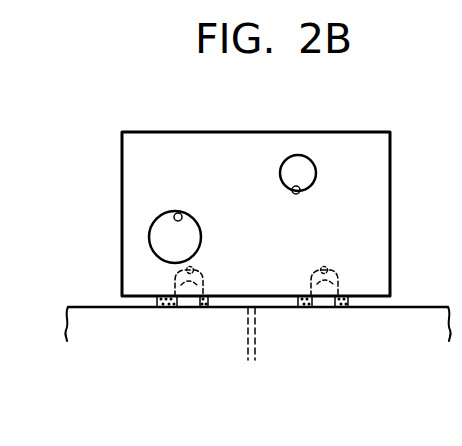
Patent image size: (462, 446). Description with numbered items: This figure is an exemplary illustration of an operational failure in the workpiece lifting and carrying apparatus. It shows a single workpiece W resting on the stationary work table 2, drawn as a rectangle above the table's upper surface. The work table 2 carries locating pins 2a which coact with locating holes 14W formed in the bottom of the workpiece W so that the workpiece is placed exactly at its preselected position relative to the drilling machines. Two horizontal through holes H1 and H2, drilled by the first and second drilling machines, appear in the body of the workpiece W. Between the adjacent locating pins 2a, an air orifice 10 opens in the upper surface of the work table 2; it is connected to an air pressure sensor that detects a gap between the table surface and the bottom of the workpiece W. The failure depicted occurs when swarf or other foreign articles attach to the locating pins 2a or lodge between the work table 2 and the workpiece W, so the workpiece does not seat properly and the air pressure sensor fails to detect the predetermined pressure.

The workpiece W is at (390, 193).
The stationary work table 2 is at (428, 312).
The locating pin 2a is at (188, 307).
The horizontal through hole H1 is at (184, 215).
The horizontal through hole H2 is at (298, 194).
The locating hole 14W is at (196, 272).
The air orifice 10 is at (247, 340).